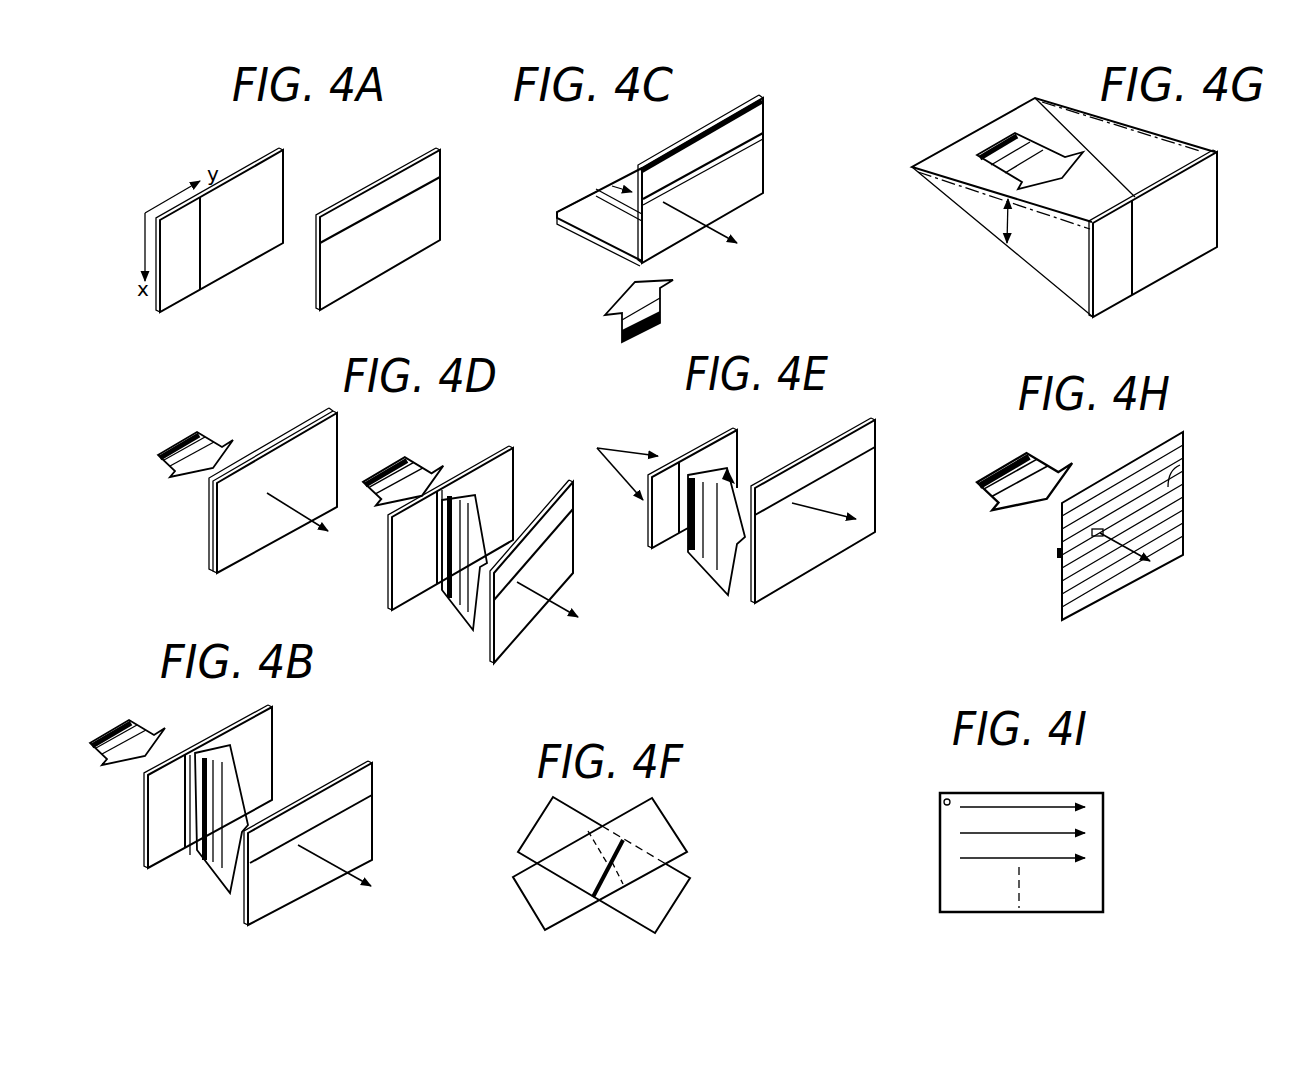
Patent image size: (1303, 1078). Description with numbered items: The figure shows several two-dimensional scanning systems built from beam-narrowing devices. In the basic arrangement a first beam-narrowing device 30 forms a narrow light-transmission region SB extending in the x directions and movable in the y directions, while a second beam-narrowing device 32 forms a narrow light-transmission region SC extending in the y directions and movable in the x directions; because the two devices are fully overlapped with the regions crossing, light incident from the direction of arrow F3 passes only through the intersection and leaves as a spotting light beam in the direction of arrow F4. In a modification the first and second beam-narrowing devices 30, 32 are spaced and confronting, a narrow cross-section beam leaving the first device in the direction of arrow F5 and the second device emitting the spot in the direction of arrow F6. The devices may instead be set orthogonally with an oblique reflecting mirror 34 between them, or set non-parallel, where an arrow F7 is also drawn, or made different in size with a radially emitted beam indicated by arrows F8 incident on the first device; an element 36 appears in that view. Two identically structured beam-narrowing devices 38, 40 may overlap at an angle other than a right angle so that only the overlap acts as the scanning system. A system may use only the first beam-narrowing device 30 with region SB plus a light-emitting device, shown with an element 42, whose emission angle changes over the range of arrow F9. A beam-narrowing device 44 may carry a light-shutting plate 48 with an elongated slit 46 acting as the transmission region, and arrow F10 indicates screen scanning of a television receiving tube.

In FIG. 4A, the first beam-narrowing device 30 is at (285, 168).
In FIG. 4C, the first beam-narrowing device 30 is at (580, 231).
In FIG. 4G, the first beam-narrowing device 30 is at (1213, 185).
In FIG. 4D, the first beam-narrowing device 30 is at (290, 435).
In FIG. 4E, the first beam-narrowing device 30 is at (740, 447).
In FIG. 4B, the first beam-narrowing device 30 is at (273, 738).
In FIG. 4A, the second beam-narrowing device 32 is at (442, 163).
In FIG. 4C, the second beam-narrowing device 32 is at (767, 168).
In FIG. 4D, the second beam-narrowing device 32 is at (340, 434).
In FIG. 4B, the second beam-narrowing device 32 is at (372, 777).
In FIG. 4C, the reflecting mirror 34 is at (561, 210).
In FIG. 4E, the panel with fold line 36 is at (873, 468).
In FIG. 4F, the first beam-narrowing device 38 is at (525, 895).
In FIG. 4F, the second beam-narrowing device 40 is at (538, 827).
In FIG. 4G, the folded web sheet 42 is at (1053, 230).
In FIG. 4H, the beam-narrowing device 44 is at (1057, 552).
In FIG. 4H, the elongated slit 46 is at (1182, 465).
In FIG. 4H, the light-shutting plate 48 is at (1120, 582).
In FIG. 4A, the light-transmission region SB is at (203, 214).
In FIG. 4C, the light-transmission region SB is at (625, 213).
In FIG. 4G, the light-transmission region SB is at (1137, 278).
In FIG. 4D, the light-transmission region SB is at (437, 500).
In FIG. 4E, the light-transmission region SB is at (680, 463).
In FIG. 4B, the light-transmission region SB is at (180, 758).
In FIG. 4A, the light-transmission region SC is at (410, 207).
In FIG. 4C, the light-transmission region SC is at (763, 136).
In FIG. 4D, the light-transmission region SC is at (545, 533).
In FIG. 4B, the light-transmission region SC is at (348, 812).
In FIG. 4C, the arrow F3 is at (662, 306).
In FIG. 4D, the arrow F3 is at (172, 442).
In FIG. 4H, the arrow F3 is at (1000, 493).
In FIG. 4B, the arrow F3 is at (103, 757).
In FIG. 4D, the arrow F4 is at (315, 525).
In FIG. 4D, the arrow F5 is at (460, 605).
In FIG. 4E, the arrow F5 is at (713, 565).
In FIG. 4B, the arrow F5 is at (218, 867).
In FIG. 4C, the arrow F6 is at (736, 228).
In FIG. 4D, the arrow F6 is at (567, 605).
In FIG. 4E, the arrow F6 is at (843, 505).
In FIG. 4H, the arrow F6 is at (1147, 560).
In FIG. 4B, the arrow F6 is at (350, 870).
In FIG. 4C, the fold direction arrow F7 is at (617, 194).
In FIG. 4E, the arrows F8 is at (620, 450).
In FIG. 4G, the arrow F9 is at (1001, 230).
In FIG. 4I, the arrow F10 is at (1063, 802).